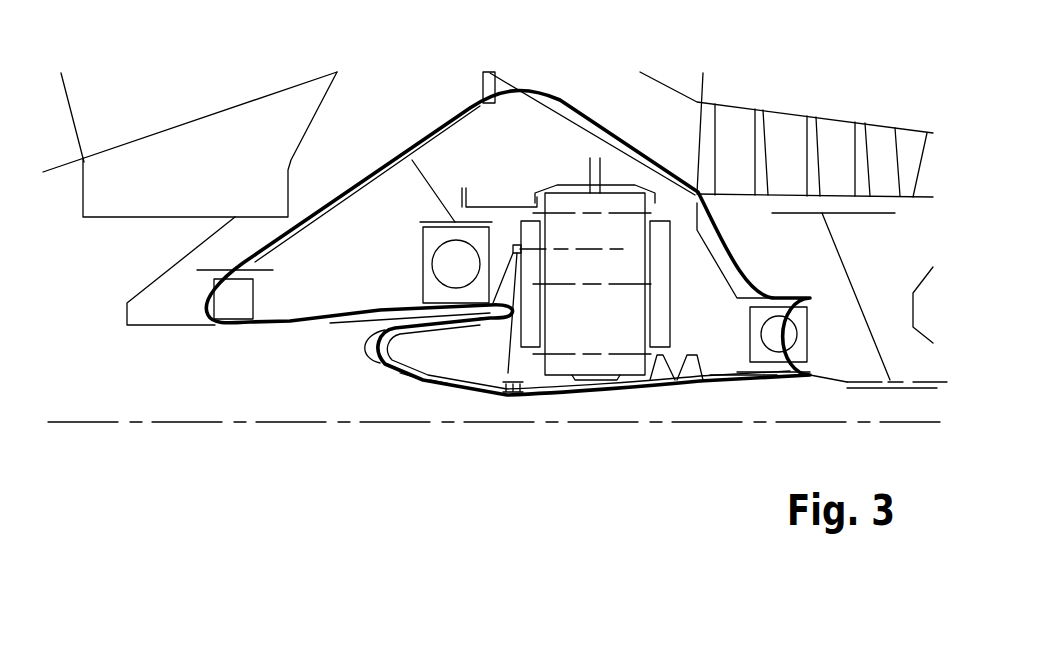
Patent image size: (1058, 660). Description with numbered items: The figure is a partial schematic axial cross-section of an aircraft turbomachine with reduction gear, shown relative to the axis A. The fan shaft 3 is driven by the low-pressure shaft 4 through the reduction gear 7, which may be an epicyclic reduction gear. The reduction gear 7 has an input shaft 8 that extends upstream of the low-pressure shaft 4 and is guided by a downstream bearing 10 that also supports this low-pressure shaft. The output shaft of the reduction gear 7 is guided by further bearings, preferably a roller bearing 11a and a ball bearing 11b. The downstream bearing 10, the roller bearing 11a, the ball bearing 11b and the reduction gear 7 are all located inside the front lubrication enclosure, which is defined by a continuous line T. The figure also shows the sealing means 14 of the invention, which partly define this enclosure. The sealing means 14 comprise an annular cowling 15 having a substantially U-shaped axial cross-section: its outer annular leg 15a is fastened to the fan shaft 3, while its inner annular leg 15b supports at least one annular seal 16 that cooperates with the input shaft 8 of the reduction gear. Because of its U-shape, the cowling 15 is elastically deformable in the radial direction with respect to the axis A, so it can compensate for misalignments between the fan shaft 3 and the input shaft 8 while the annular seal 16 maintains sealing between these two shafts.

The fan shaft 3 is at (159, 326).
The low-pressure shaft 4 is at (917, 382).
The reduction gear 7 is at (608, 230).
The input shaft 8 is at (627, 387).
The downstream bearing 10 is at (788, 355).
The roller bearing 11a is at (240, 303).
The ball bearing 11b is at (443, 258).
The sealing means 14 is at (404, 389).
The annular cowling 15 is at (362, 356).
The outer annular leg 15a is at (384, 323).
The inner annular leg 15b is at (441, 387).
The annular seal 16 is at (526, 398).
The axis A is at (70, 422).
The continuous line T is at (534, 89).